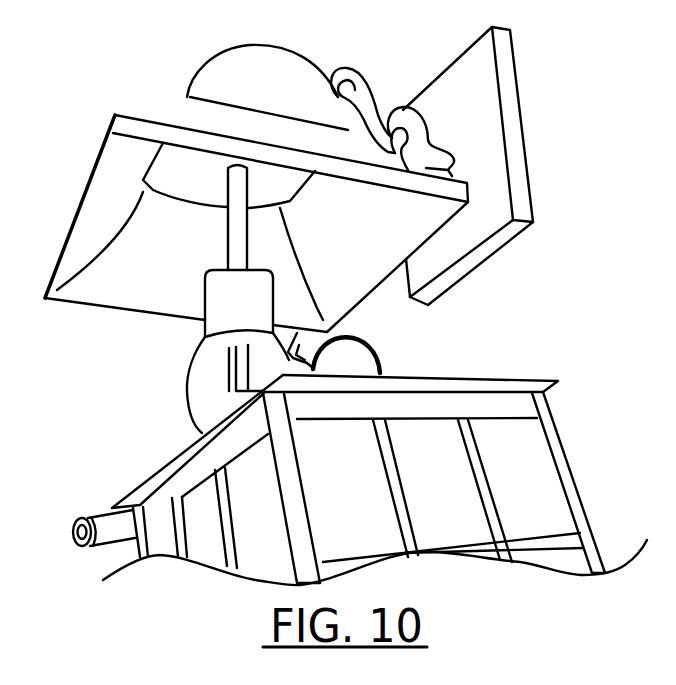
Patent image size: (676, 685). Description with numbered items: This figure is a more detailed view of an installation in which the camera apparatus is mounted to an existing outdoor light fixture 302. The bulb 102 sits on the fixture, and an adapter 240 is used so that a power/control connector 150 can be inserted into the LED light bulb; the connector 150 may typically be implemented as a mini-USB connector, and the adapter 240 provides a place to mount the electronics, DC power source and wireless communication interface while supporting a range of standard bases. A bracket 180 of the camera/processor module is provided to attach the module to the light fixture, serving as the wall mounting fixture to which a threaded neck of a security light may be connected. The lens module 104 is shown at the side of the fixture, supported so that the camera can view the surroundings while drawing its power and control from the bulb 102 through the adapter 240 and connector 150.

The bulb 102 is at (185, 397).
The lens module 104 is at (77, 520).
The power/control connector 150 is at (380, 372).
The bracket 180 is at (522, 125).
The adapter 240 is at (297, 333).
The light fixture 302 is at (577, 483).